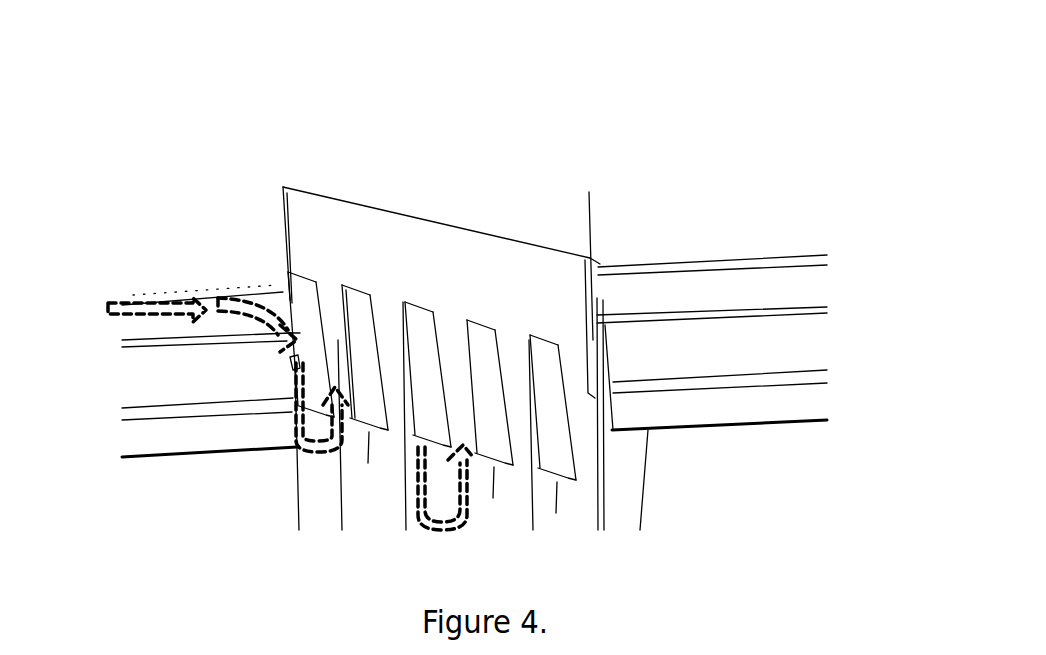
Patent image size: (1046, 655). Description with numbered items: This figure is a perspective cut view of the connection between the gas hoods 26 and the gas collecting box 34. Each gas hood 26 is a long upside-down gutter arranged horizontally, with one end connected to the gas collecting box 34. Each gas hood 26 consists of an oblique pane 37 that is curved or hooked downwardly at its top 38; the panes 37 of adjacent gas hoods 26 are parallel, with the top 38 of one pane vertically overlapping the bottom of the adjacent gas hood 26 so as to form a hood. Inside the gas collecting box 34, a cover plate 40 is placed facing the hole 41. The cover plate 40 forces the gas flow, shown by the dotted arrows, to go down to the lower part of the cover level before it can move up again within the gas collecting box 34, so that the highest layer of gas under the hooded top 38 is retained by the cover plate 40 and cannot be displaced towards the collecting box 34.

The gas hood 26 is at (133, 373).
The gas collecting box 34 is at (514, 286).
The oblique pane 37 is at (787, 332).
The top of the pane 38 is at (690, 282).
The cover plate 40 is at (303, 300).
The hole 41 is at (290, 300).